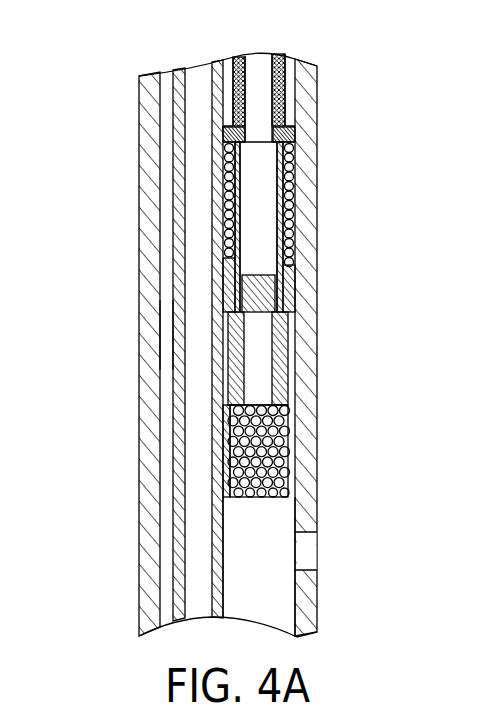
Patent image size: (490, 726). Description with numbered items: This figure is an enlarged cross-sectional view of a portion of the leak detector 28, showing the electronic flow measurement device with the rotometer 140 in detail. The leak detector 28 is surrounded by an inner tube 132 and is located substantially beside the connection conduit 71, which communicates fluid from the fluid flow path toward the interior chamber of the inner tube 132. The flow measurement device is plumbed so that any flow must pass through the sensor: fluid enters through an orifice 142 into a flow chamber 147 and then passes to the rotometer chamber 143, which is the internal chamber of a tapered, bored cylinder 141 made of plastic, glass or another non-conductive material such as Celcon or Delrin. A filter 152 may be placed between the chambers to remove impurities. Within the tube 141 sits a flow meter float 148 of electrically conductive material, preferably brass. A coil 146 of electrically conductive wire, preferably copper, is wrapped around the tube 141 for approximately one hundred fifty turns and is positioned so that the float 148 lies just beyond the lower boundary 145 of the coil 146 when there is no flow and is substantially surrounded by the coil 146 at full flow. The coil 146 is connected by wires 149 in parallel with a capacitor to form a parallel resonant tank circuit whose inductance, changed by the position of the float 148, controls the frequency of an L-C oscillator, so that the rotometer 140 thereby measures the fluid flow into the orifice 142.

The leak detector 28 is at (165, 333).
The connection conduit 71 is at (173, 128).
The inner tube 132 is at (140, 177).
The rotometer 140 is at (328, 317).
The tapered, bored cylinder 141 is at (313, 397).
The orifice 142 is at (310, 542).
The rotometer chamber 143 is at (260, 197).
The lower boundary 145 is at (313, 288).
The coil 146 is at (292, 157).
The flow chamber 147 is at (260, 583).
The flow meter float 148 is at (243, 279).
The wires 149 is at (227, 123).
The filter 152 is at (268, 460).